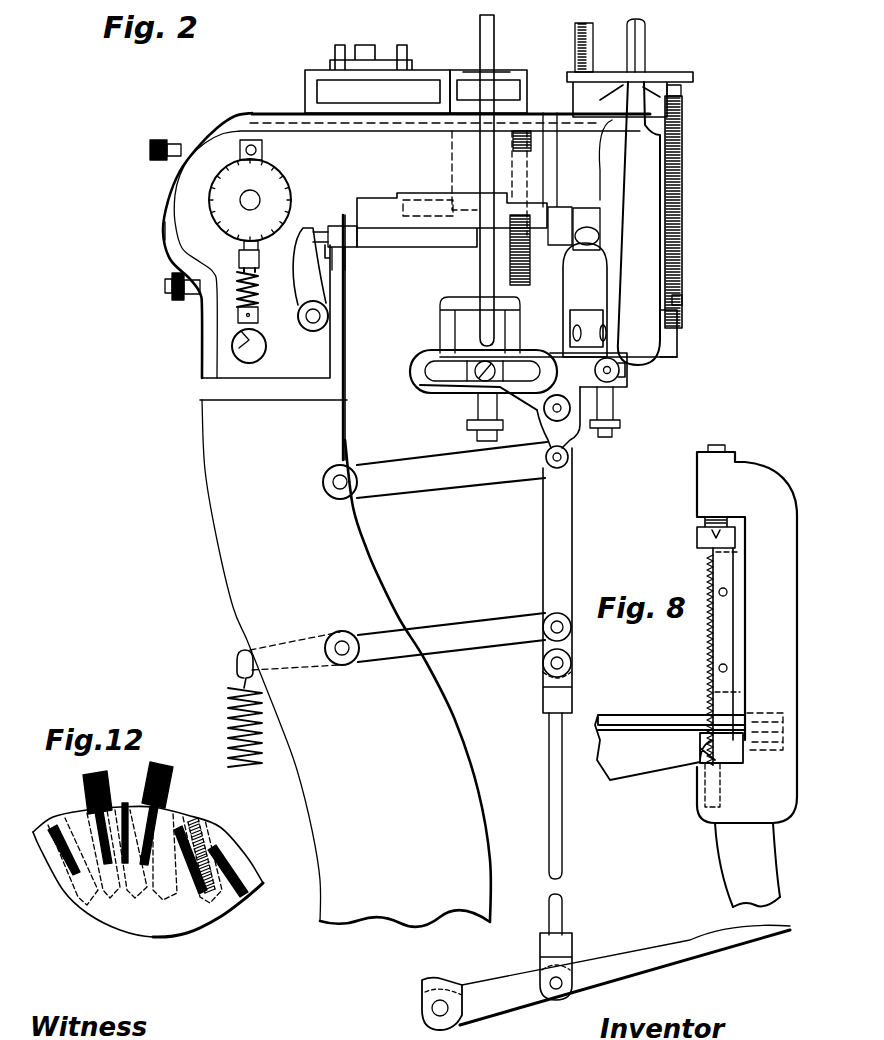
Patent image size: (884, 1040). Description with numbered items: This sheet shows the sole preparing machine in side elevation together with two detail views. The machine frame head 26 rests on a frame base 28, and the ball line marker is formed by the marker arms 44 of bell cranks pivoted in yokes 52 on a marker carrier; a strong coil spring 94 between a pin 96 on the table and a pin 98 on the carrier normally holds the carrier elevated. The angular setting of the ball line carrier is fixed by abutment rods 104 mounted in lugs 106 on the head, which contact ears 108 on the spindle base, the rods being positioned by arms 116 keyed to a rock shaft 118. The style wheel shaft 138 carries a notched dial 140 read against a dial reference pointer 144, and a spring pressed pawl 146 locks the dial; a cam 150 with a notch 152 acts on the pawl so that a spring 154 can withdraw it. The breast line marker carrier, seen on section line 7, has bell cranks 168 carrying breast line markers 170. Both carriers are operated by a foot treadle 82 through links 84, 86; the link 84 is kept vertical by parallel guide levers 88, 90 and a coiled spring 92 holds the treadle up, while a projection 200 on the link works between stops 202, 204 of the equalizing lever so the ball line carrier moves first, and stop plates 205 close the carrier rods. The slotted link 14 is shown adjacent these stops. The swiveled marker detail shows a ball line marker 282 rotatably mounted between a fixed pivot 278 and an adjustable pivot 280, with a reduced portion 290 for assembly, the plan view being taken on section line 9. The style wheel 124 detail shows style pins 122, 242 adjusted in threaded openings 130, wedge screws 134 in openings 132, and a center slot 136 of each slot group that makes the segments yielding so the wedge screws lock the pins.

In FIG. 2, the frame base 28 is at (217, 463).
In FIG. 2, the machine frame head 26 is at (192, 196).
In FIG. 2, the dial 140 is at (275, 193).
In FIG. 2, the shaft 138 is at (262, 200).
In FIG. 2, the dial reference pointer 144 is at (263, 158).
In FIG. 2, the spring pressed pawl 146 is at (240, 248).
In FIG. 2, the spring 154 is at (237, 287).
In FIG. 2, the notch 152 is at (236, 340).
In FIG. 2, the cam 150 is at (250, 364).
In FIG. 2, the arms 116 is at (297, 292).
In FIG. 2, the rock shaft 118 is at (330, 317).
In FIG. 2, the lugs 106 is at (355, 248).
In FIG. 2, the abutment rods 104 is at (412, 230).
In FIG. 2, the ears 108 is at (565, 238).
In FIG. 2, the bell cranks 168 is at (487, 257).
In FIG. 2, the breast line markers 170 is at (495, 40).
In FIG. 2, the section line 7— 7 is at (530, 100).
In FIG. 2, the marker arms 44 is at (650, 22).
In FIG. 2, the pin 96 is at (685, 93).
In FIG. 2, the coil spring 94 is at (683, 258).
In FIG. 2, the pin 98 is at (684, 302).
In FIG. 2, the yokes 52 is at (673, 348).
In FIG. 2, the slotted link 14 is at (558, 407).
In FIG. 2, the stop plates 205 is at (473, 430).
In FIG. 2, the stop 204 is at (580, 430).
In FIG. 2, the stop 202 is at (545, 442).
In FIG. 2, the projection 200 is at (571, 462).
In FIG. 2, the parallel guide lever 88 is at (405, 486).
In FIG. 2, the link 84 is at (557, 553).
In FIG. 2, the parallel guide lever 90 is at (415, 633).
In FIG. 2, the coiled spring 92 is at (230, 740).
In FIG. 2, the link 86 is at (560, 808).
In FIG. 2, the foot treadle 82 is at (617, 963).
In FIG. 8, the adjustable pivot 280 is at (722, 444).
In FIG. 8, the ball line marker 282 is at (700, 532).
In FIG. 8, the section line 9— 9 is at (785, 553).
In FIG. 8, the reduced portion 290 is at (712, 560).
In FIG. 8, the fixed pivot 278 is at (713, 780).
In FIG. 12, the shoe style wheel 124 is at (130, 910).
In FIG. 12, the style pins 122 is at (140, 803).
In FIG. 12, the style pins 242 is at (168, 790).
In FIG. 12, the radial screw threaded openings 130 is at (182, 826).
In FIG. 12, the center slot 136 is at (70, 800).
In FIG. 12, the screw threaded openings 132 is at (200, 850).
In FIG. 12, the wedge screws 134 is at (217, 847).